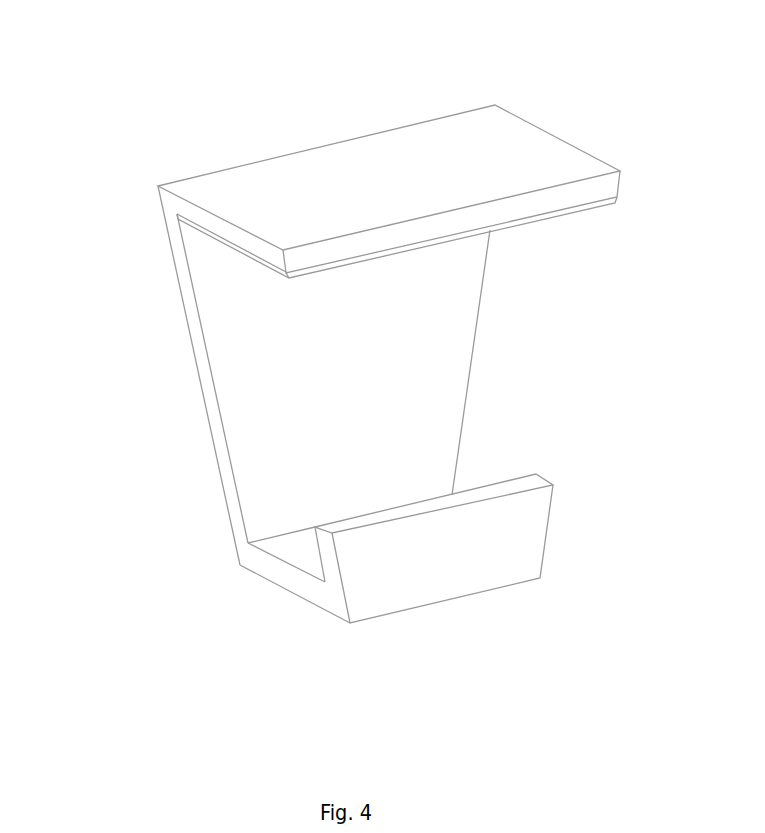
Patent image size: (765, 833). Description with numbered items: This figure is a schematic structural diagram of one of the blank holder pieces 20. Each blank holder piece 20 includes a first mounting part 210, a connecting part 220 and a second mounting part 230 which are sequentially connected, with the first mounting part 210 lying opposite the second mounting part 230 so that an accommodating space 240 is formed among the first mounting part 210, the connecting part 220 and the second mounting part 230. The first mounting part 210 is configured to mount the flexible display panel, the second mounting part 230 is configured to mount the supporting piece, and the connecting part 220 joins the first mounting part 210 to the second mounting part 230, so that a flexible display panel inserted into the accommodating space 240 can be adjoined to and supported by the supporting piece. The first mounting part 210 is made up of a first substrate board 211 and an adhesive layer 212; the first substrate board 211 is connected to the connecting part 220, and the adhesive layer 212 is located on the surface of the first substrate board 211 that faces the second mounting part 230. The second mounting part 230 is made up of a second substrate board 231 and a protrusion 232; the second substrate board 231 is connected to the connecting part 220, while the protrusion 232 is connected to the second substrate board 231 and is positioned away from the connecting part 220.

The blank holder piece 20 is at (533, 50).
The first mounting part 210 is at (323, 78).
The first substrate board 211 is at (295, 207).
The adhesive layer 212 is at (219, 240).
The connecting part 220 is at (195, 363).
The accommodating space 240 is at (493, 377).
The second mounting part 230 is at (267, 698).
The second substrate board 231 is at (282, 575).
The protrusion 232 is at (353, 577).